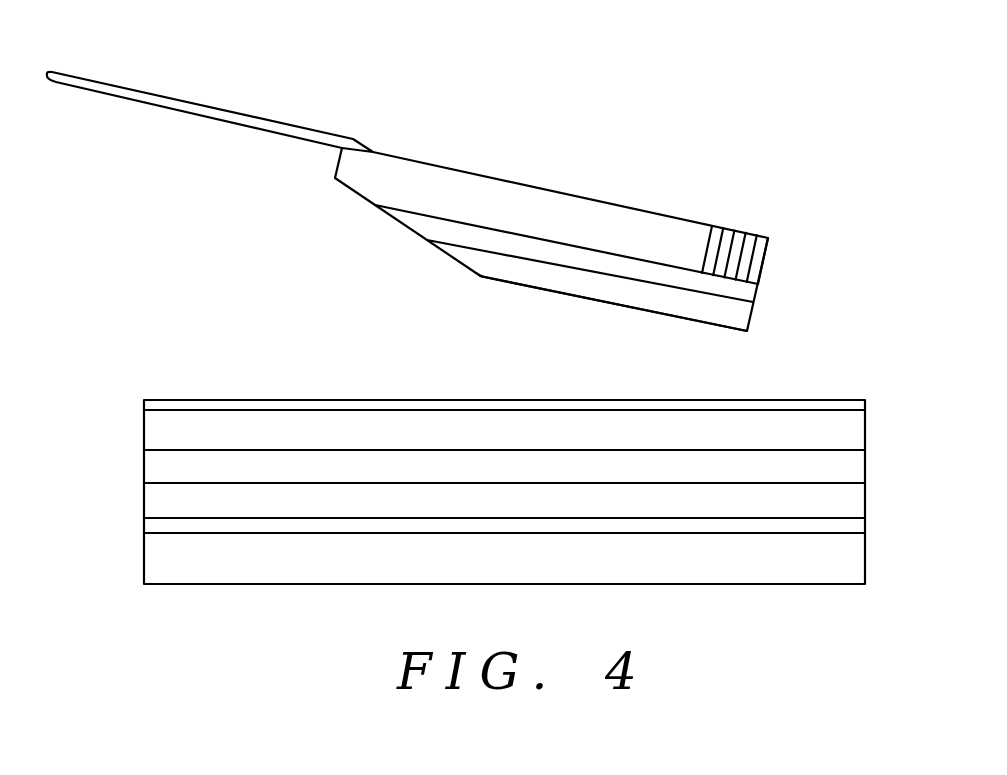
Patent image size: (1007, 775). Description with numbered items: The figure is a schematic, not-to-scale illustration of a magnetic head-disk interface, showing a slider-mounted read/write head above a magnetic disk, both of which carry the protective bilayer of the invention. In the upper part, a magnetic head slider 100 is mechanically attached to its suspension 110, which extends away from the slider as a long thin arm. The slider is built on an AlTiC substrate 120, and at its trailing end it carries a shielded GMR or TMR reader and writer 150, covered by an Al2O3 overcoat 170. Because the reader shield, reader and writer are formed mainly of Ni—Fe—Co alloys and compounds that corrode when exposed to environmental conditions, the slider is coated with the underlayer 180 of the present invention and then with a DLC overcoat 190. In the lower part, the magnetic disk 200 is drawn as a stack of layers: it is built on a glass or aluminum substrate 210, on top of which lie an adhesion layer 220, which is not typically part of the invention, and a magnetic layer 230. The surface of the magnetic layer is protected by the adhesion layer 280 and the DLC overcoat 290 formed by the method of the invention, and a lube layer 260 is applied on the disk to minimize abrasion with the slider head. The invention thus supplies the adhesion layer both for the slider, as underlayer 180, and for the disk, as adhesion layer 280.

The magnetic head slider 100 is at (445, 199).
The suspension 110 is at (265, 125).
The AlTiC substrate 120 is at (582, 212).
The shielded GMR or TMR reader and writer 150 is at (772, 231).
The Al2O3 overcoat 170 is at (765, 265).
The underlayer 180 is at (747, 293).
The DLC overcoat 190 is at (740, 315).
The magnetic disk 200 is at (544, 444).
The glass or aluminum substrate 210 is at (853, 562).
The adhesion layer 220 is at (853, 522).
The magnetic layer 230 is at (853, 498).
The adhesion layer 280 is at (853, 467).
The DLC overcoat 290 is at (853, 433).
The lube layer 260 is at (853, 403).